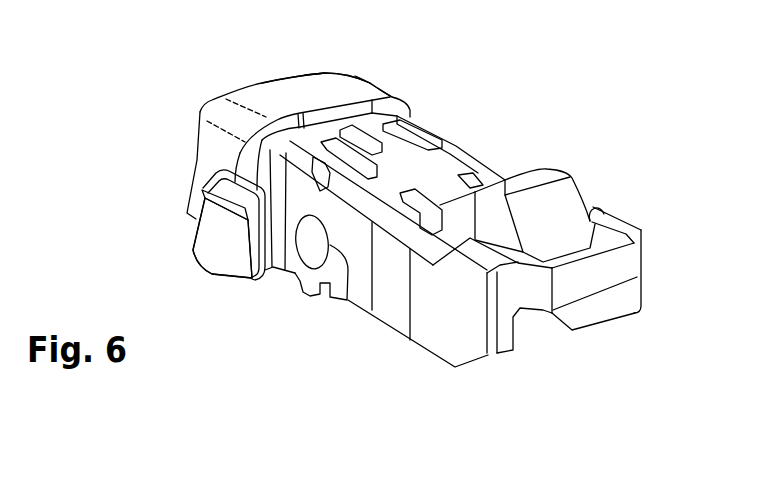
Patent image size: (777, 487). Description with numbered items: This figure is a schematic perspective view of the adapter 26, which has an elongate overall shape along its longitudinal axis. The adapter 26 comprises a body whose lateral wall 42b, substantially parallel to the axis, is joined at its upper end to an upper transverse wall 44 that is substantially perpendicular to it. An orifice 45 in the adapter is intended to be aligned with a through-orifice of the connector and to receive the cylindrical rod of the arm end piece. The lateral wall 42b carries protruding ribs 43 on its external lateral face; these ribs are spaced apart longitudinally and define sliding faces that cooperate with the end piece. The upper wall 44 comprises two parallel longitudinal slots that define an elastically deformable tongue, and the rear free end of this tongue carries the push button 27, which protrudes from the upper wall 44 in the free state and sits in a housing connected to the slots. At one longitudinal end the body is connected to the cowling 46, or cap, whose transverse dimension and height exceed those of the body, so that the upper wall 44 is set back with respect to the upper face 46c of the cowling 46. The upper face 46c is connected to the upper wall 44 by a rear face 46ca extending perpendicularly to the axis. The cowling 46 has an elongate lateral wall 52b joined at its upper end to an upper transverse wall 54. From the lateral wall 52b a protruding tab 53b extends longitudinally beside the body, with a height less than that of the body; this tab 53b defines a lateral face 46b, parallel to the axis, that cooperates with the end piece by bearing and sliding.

The adapter 26 is at (637, 180).
The push button 27 is at (583, 227).
The lateral wall 42b is at (433, 292).
The protruding ribs 43 is at (282, 252).
The upper transverse wall 44 is at (445, 188).
The orifice 45 is at (352, 310).
The cowling 46 is at (225, 122).
The lateral face 46b is at (225, 253).
The upper face 46c is at (277, 113).
The rear face 46ca is at (353, 113).
The lateral wall 52b is at (210, 168).
The protruding tab 53b is at (205, 242).
The upper transverse wall 54 is at (323, 93).